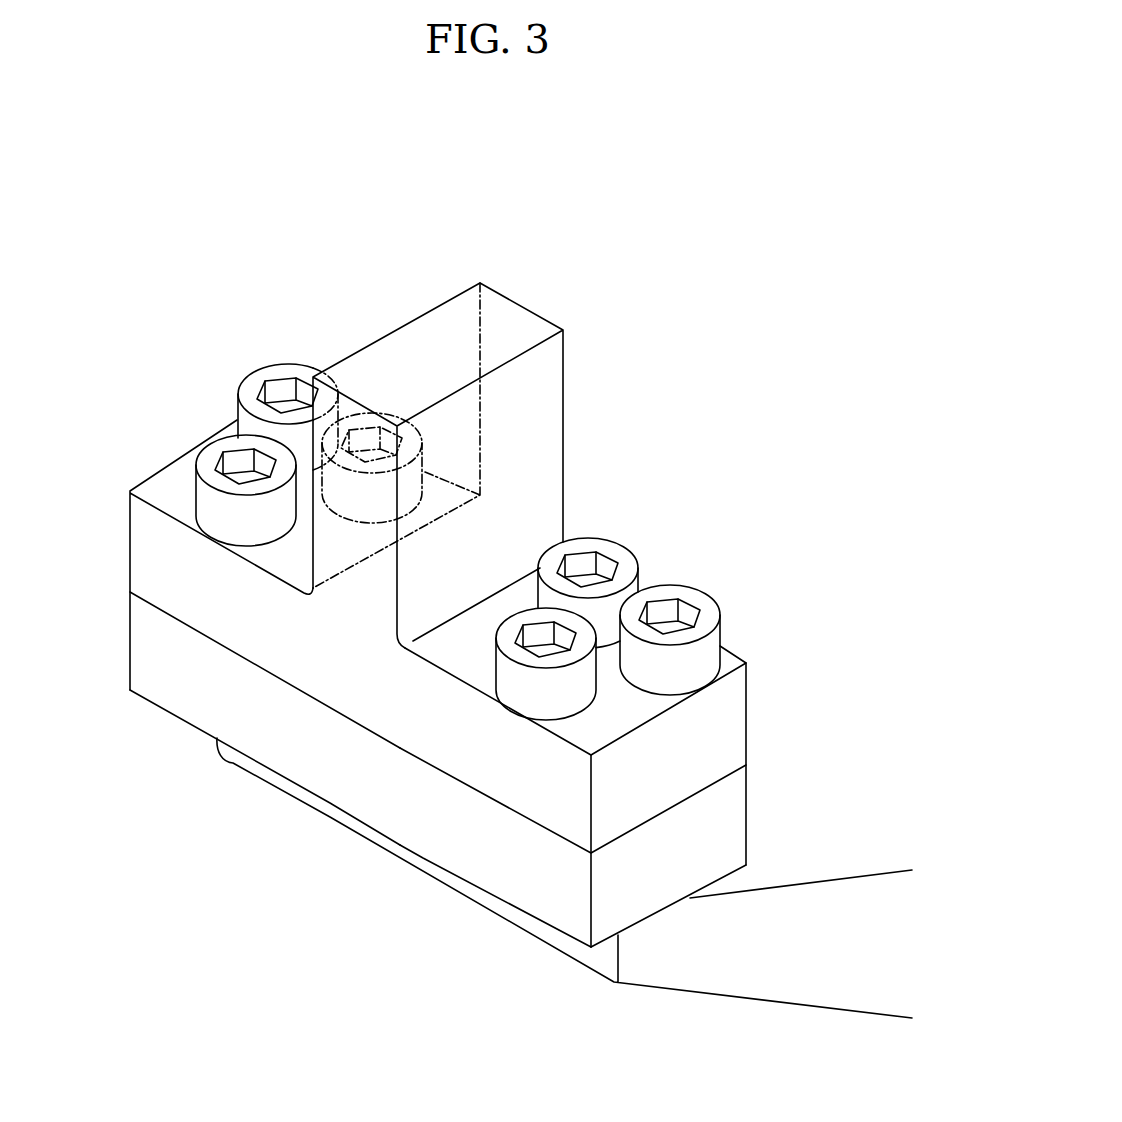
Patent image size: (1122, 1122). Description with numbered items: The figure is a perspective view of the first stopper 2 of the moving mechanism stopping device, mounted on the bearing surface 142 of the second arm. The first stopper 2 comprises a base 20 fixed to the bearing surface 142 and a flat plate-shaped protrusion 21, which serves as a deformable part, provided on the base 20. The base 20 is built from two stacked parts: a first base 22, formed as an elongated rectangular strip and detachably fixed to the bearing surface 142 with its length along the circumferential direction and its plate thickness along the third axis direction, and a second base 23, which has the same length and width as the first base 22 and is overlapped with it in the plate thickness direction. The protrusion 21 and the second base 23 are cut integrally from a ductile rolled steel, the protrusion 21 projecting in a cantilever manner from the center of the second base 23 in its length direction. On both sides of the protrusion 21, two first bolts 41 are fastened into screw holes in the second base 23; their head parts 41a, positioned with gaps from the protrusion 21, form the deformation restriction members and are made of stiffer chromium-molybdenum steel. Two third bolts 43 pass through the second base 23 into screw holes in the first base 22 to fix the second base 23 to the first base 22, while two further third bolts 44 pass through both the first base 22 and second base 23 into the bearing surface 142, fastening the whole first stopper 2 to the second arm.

The first stopper 2 is at (117, 296).
The base 20 is at (117, 535).
The protrusion 21 is at (449, 360).
The first base 22 is at (336, 757).
The second base 23 is at (470, 755).
The first bolt 41 is at (399, 399).
The head part 41a is at (357, 405).
The third bolt 43 is at (199, 431).
The third bolt 44 is at (274, 347).
The bearing surface 142 is at (757, 880).